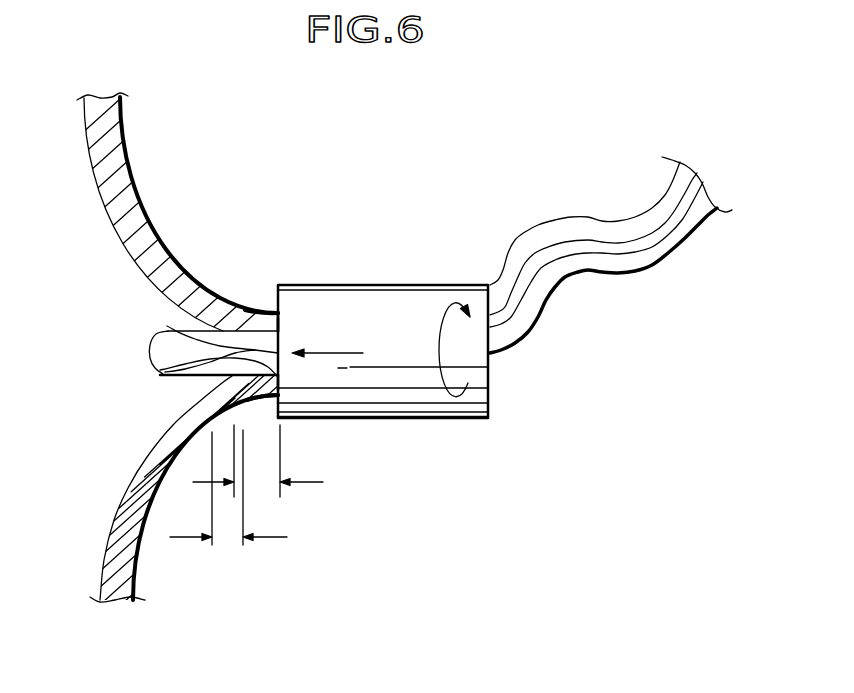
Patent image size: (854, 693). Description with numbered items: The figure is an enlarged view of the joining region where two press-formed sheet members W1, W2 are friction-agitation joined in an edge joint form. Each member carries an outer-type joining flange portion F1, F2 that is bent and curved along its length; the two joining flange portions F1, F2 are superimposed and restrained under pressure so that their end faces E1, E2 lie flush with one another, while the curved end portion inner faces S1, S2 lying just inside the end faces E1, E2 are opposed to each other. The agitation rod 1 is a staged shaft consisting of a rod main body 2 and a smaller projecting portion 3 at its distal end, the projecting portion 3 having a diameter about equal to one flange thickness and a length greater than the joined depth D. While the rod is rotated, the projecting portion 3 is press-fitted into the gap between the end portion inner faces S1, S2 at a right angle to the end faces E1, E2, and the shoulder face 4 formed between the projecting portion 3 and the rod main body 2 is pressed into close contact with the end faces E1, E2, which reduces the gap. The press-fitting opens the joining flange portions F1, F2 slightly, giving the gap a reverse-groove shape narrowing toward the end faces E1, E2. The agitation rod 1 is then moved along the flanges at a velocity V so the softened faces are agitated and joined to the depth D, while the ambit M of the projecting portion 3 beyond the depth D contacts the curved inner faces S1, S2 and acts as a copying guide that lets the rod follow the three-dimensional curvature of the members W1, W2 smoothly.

The agitation rod 1 is at (432, 283).
The rod main body 2 is at (442, 415).
The projecting portion 3 is at (152, 349).
The shoulder face 4 is at (277, 320).
The member to be joined W1 is at (121, 133).
The member to be joined W2 is at (138, 583).
The end portion inner face S1 is at (167, 326).
The end portion inner face S2 is at (160, 370).
The end face E1 is at (278, 324).
The end face E2 is at (279, 383).
The joining flange portion F1 is at (251, 313).
The joining flange portion F2 is at (257, 397).
The joined depth D is at (258, 471).
The ambit of the projecting portion M is at (228, 501).
The velocity V is at (518, 362).